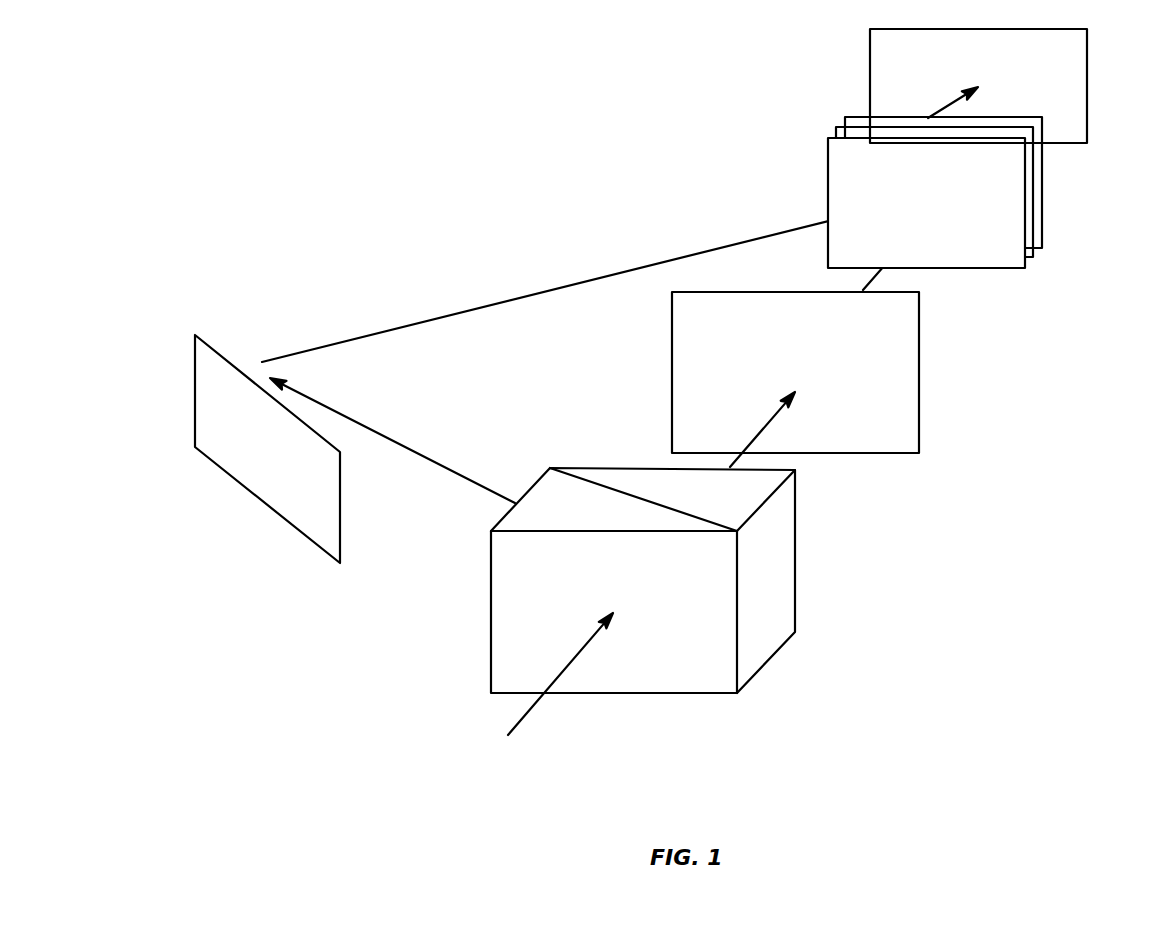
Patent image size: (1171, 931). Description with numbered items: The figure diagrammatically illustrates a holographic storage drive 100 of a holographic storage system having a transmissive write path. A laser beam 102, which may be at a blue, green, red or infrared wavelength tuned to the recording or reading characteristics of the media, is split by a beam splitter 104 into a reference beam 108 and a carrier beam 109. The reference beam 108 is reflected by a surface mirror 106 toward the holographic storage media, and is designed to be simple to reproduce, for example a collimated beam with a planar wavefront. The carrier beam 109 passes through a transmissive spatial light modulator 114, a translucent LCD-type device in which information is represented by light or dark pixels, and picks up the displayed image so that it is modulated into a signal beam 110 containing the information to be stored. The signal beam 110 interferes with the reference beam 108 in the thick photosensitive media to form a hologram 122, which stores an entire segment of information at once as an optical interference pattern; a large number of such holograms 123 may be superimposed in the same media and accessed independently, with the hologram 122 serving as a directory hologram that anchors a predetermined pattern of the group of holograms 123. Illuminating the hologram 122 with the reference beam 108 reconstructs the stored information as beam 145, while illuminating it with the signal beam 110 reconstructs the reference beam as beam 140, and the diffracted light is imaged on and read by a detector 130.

The holographic storage drive 100 is at (305, 155).
The laser beam 102 is at (528, 713).
The beam splitter 104 is at (795, 548).
The surface mirror 106 is at (268, 505).
The reference beam 108 is at (397, 325).
The carrier beam 109 is at (767, 418).
The signal beam 110 is at (900, 253).
The transmissive spatial light modulator 114 is at (920, 372).
The hologram 122 is at (827, 192).
The holograms 123 is at (845, 118).
The detector 130 is at (1088, 85).
The reconstructed reference beam 140 is at (950, 118).
The reconstructed information beam 145 is at (955, 97).